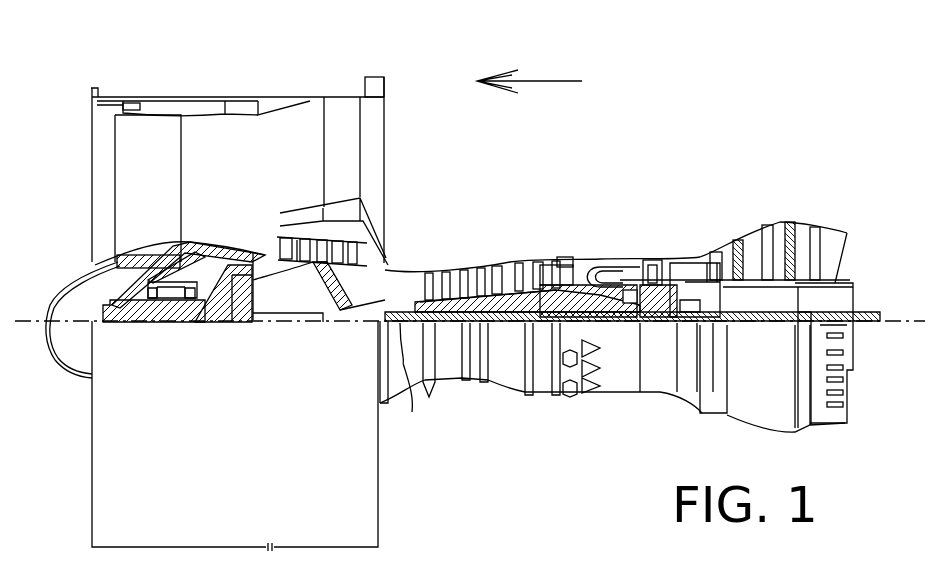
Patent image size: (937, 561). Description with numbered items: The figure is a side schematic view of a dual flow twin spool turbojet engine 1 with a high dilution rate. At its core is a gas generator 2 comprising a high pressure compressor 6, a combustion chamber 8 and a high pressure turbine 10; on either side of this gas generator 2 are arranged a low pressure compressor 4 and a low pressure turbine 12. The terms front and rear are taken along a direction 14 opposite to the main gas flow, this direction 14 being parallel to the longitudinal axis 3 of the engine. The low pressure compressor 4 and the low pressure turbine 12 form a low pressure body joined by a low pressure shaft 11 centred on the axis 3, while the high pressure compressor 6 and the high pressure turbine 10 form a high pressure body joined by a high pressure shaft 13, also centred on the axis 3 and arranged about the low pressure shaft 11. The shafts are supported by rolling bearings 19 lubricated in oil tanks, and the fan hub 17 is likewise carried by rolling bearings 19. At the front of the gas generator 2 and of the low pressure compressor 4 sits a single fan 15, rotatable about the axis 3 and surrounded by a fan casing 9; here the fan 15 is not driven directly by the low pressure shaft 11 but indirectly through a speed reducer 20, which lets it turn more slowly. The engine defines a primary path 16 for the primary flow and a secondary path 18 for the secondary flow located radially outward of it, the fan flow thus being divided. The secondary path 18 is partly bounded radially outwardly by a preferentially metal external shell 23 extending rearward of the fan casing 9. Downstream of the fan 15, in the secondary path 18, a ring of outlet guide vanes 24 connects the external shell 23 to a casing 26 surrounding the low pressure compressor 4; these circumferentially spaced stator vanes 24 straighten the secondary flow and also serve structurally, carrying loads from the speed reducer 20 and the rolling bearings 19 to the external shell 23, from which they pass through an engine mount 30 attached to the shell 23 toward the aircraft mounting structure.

The turbojet engine 1 is at (552, 201).
The gas generator 2 is at (489, 395).
The longitudinal axis 3 is at (27, 321).
The low pressure compressor 4 is at (340, 240).
The high pressure compressor 6 is at (515, 310).
The combustion chamber 8 is at (592, 278).
The fan casing 9 is at (200, 101).
The high pressure turbine 10 is at (653, 262).
The low pressure shaft 11 is at (410, 412).
The low pressure turbine 12 is at (752, 235).
The high pressure shaft 13 is at (643, 323).
The direction 14 is at (555, 80).
The fan 15 is at (135, 103).
The primary path 16 is at (413, 280).
The fan hub 17 is at (157, 315).
The secondary path 18 is at (247, 158).
The rolling bearings 19 is at (192, 315).
The speed reducer 20 is at (238, 322).
The external shell 23 is at (300, 97).
The outlet guide vanes 24 is at (342, 152).
The casing 26 is at (297, 240).
The engine mount 30 is at (387, 83).